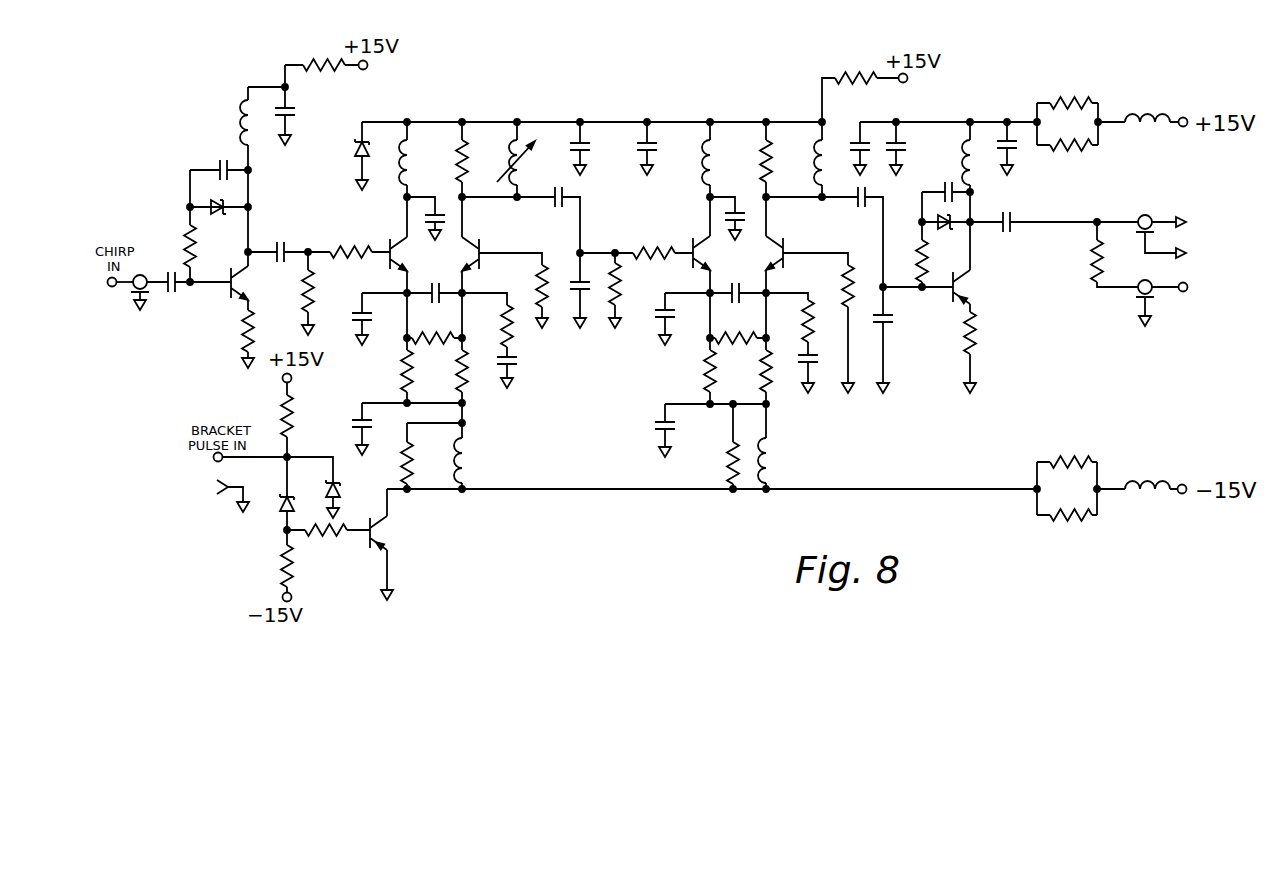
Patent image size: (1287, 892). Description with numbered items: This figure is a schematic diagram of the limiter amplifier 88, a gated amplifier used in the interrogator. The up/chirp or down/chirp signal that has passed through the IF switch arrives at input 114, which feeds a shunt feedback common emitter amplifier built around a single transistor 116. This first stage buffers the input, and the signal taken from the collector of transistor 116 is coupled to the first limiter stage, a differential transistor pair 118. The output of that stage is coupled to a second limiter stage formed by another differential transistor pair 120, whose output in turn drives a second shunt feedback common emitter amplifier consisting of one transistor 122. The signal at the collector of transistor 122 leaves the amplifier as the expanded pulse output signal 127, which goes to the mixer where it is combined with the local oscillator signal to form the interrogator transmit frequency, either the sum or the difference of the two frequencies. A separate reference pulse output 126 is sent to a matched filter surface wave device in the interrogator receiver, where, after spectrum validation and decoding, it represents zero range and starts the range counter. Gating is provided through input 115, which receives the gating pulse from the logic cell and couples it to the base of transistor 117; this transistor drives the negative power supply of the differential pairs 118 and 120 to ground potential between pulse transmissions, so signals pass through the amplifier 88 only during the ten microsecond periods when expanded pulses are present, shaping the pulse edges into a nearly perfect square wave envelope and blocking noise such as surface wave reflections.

The limiter amplifier 88 is at (665, 535).
The input 114 is at (111, 287).
The input 115 is at (213, 460).
The transistor 116 is at (244, 284).
The transistor 117 is at (385, 530).
The differential transistor pair 118 is at (402, 252).
The differential transistor pair 120 is at (703, 251).
The transistor 122 is at (966, 282).
The output 126 is at (1184, 293).
The output signal 127 is at (1183, 217).